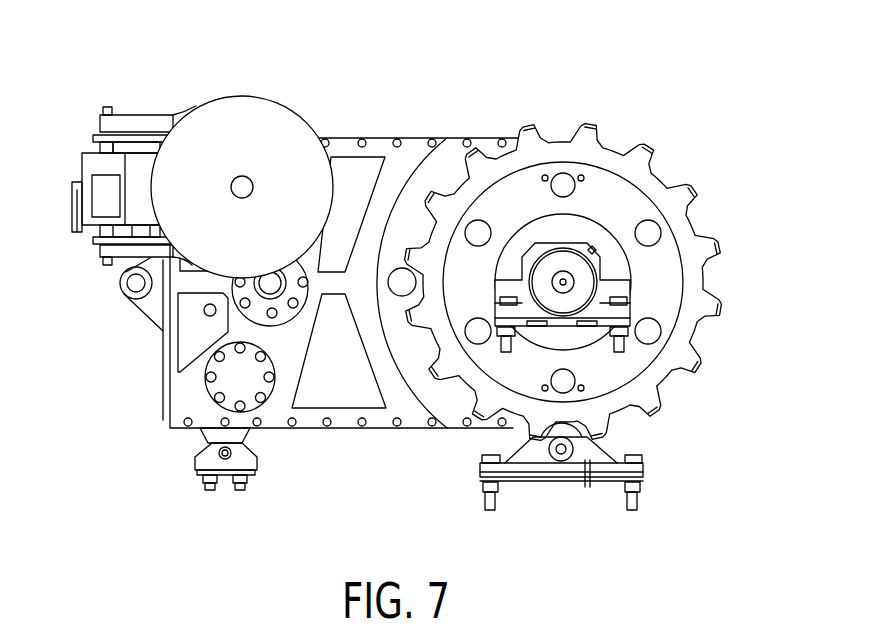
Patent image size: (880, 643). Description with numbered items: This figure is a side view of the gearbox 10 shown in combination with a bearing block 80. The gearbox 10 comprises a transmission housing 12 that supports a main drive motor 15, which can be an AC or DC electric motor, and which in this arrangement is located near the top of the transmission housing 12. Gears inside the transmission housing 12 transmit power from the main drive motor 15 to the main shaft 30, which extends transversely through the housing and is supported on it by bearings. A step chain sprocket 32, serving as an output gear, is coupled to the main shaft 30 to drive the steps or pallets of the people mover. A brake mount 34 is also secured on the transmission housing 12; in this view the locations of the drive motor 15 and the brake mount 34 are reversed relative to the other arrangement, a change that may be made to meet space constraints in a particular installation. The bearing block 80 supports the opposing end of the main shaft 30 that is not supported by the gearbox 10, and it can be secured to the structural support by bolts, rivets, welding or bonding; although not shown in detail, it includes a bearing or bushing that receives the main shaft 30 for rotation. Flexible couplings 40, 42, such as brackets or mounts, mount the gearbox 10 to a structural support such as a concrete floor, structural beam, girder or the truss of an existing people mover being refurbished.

The gearbox 10 is at (412, 129).
The transmission housing 12 is at (343, 138).
The main drive motor 15 is at (235, 112).
The main shaft 30 is at (578, 268).
The step chain sprocket 32 is at (593, 140).
The brake mount 34 is at (225, 375).
The flexible coupling 40 is at (537, 460).
The flexible coupling 42 is at (247, 468).
The bearing block 80 is at (618, 315).